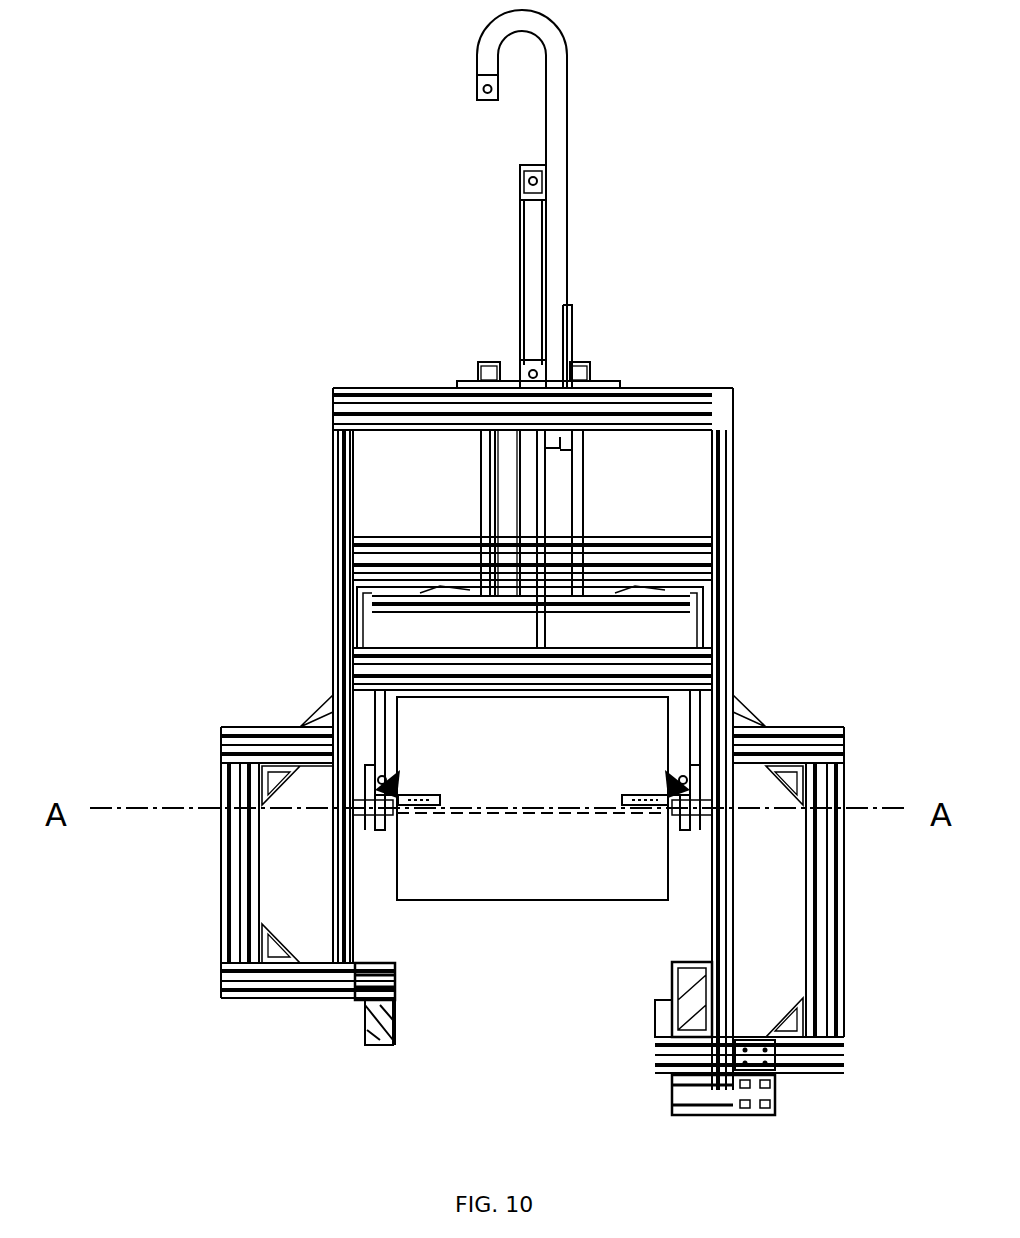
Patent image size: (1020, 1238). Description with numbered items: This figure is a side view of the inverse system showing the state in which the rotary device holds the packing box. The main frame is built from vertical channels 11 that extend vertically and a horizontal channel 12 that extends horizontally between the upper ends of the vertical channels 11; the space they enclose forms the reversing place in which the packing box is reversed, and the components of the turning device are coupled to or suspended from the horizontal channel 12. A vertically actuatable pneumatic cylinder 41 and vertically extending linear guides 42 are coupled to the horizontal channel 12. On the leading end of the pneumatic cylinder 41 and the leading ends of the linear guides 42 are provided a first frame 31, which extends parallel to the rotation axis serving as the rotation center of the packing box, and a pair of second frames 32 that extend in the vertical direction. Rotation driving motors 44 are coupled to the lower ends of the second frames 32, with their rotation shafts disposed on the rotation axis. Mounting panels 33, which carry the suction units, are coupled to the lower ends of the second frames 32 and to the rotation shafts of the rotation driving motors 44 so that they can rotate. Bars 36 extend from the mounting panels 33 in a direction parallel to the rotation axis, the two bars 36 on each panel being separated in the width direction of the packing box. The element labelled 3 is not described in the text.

The workpiece box 3 is at (498, 716).
The vertical channels 11 is at (737, 501).
The horizontal channel 12 is at (663, 387).
The first frame 31 is at (462, 591).
The second frames 32 is at (371, 633).
The mounting panels 33 is at (695, 776).
The bars 36 is at (422, 818).
The pneumatic cylinder 41 is at (506, 320).
The linear guides 42 is at (461, 489).
The rotation driving motors 44 is at (415, 872).